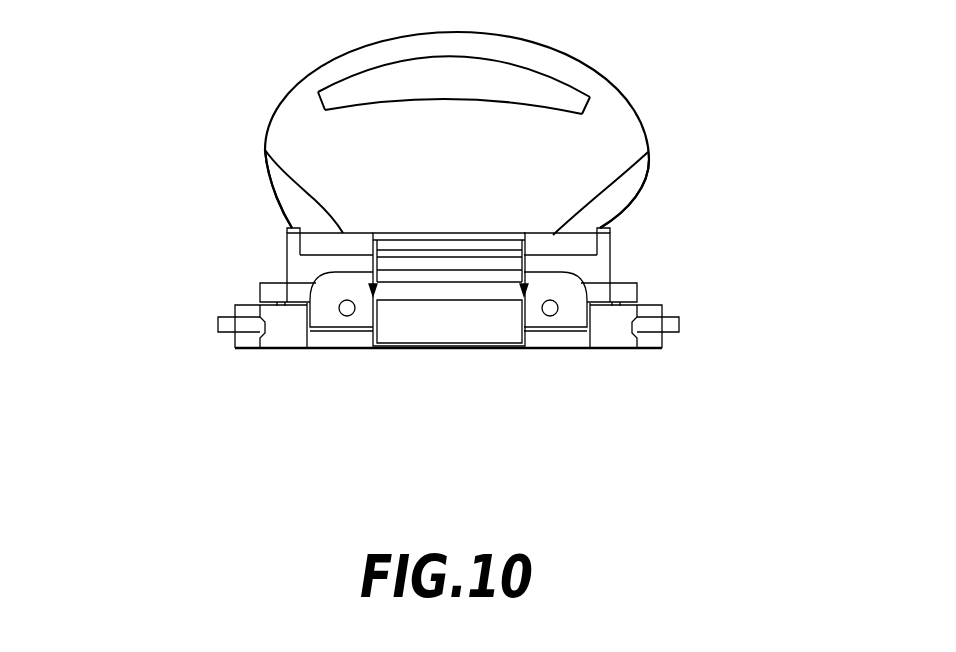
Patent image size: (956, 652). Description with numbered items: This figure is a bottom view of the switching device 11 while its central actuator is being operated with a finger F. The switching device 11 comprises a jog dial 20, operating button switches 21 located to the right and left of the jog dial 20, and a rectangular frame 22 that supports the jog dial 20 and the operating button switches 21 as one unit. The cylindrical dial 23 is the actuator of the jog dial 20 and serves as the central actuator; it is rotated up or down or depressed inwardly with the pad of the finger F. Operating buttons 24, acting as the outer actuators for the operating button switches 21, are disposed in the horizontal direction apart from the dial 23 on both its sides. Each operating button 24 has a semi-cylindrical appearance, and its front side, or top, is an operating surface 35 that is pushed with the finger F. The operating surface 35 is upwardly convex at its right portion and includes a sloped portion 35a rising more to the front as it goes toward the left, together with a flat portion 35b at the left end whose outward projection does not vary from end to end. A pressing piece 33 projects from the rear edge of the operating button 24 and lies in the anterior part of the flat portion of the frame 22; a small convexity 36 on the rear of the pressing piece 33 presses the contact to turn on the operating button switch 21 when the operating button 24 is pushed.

The finger F is at (620, 110).
The operating surface 35 is at (449, 149).
The sloped portion 35a is at (265, 150).
The flat portion 35b is at (292, 228).
The operating button 24 is at (290, 233).
The operating button switch 21 is at (298, 272).
The pressing piece 33 is at (258, 292).
The small convexity 36 is at (273, 305).
The jog dial 20 is at (407, 288).
The dial 23 is at (490, 290).
The frame 22 is at (478, 335).
The switching device 11 is at (415, 350).